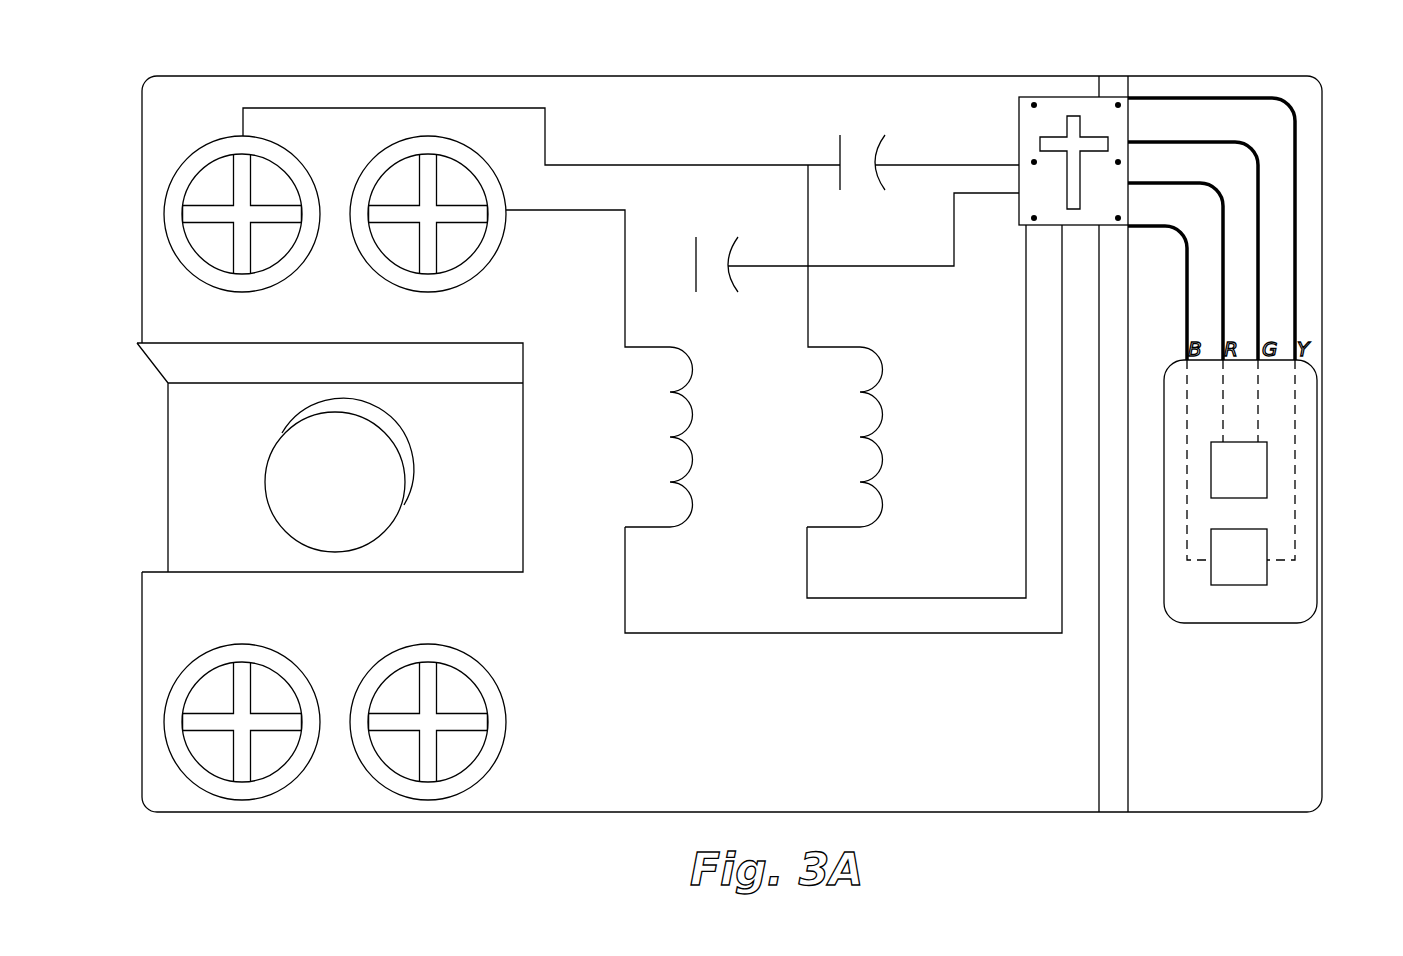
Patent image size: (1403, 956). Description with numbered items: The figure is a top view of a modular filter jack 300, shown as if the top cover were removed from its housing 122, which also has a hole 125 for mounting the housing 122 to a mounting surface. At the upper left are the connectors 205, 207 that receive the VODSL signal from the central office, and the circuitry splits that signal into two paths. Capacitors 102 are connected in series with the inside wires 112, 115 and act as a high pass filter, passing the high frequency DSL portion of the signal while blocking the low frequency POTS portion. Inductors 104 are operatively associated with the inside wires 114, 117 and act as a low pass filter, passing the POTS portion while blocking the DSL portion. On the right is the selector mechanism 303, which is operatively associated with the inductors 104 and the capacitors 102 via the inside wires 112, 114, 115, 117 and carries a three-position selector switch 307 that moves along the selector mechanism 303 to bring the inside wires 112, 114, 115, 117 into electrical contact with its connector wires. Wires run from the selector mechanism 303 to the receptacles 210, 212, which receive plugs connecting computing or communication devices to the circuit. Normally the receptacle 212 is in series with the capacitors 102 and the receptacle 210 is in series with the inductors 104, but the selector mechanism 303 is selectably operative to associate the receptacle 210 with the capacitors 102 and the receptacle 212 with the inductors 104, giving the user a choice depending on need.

The modular filter jack 300 is at (1168, 52).
The housing 122 is at (650, 76).
The connector 205 is at (237, 134).
The connector 207 is at (426, 134).
The capacitor 102 is at (840, 152).
The inductor 104 is at (692, 410).
The inside wire 112 is at (912, 266).
The inside wire 114 is at (830, 633).
The inside wire 115 is at (920, 164).
The inside wire 117 is at (897, 598).
The hole 125 is at (410, 480).
The selector mechanism 303 is at (1053, 117).
The three-position selector switch 307 is at (1085, 150).
The receptacle 210 is at (1267, 478).
The receptacle 212 is at (1267, 553).